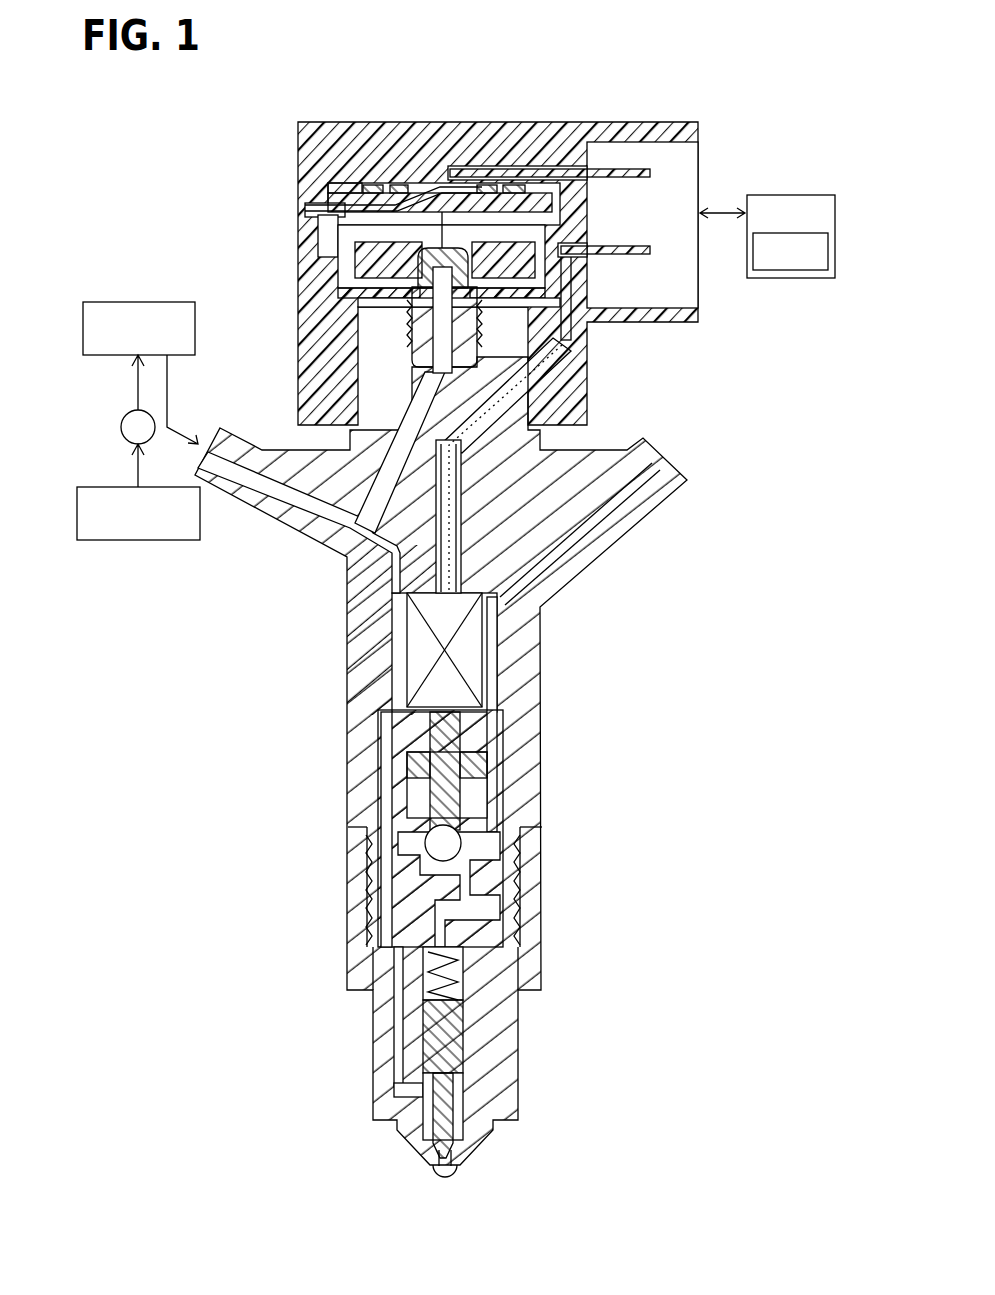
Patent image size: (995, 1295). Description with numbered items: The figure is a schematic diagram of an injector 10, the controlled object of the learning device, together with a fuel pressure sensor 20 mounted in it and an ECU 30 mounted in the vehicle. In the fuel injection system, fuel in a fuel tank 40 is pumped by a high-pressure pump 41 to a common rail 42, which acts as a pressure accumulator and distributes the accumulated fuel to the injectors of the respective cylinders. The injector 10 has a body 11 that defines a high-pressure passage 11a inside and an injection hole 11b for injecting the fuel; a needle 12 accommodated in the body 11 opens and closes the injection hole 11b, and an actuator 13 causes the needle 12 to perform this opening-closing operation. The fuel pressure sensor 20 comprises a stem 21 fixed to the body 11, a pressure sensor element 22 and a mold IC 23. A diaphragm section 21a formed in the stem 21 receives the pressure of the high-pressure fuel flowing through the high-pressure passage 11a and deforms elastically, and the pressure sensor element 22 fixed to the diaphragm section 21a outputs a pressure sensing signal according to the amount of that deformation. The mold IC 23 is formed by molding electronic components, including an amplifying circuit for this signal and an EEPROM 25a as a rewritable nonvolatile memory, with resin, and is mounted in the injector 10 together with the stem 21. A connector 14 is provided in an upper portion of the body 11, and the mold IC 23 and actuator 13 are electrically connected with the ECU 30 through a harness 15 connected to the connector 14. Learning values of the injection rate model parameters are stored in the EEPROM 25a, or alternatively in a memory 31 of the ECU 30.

The injector 10 is at (263, 186).
The body 11 is at (360, 625).
The high-pressure passage 11a is at (277, 493).
The injection hole 11b is at (458, 1172).
The needle 12 is at (455, 1047).
The actuator 13 is at (428, 667).
The connector 14 is at (735, 131).
The harness 15 is at (719, 218).
The fuel pressure sensor 20 is at (385, 349).
The stem 21 is at (405, 318).
The diaphragm section 21a is at (562, 330).
The pressure sensor element 22 is at (442, 212).
The mold IC 23 is at (527, 222).
The EEPROM 25a is at (493, 168).
The ECU 30 is at (788, 195).
The memory 31 is at (788, 280).
The fuel tank 40 is at (138, 540).
The high-pressure pump 41 is at (121, 427).
The common rail 42 is at (137, 302).